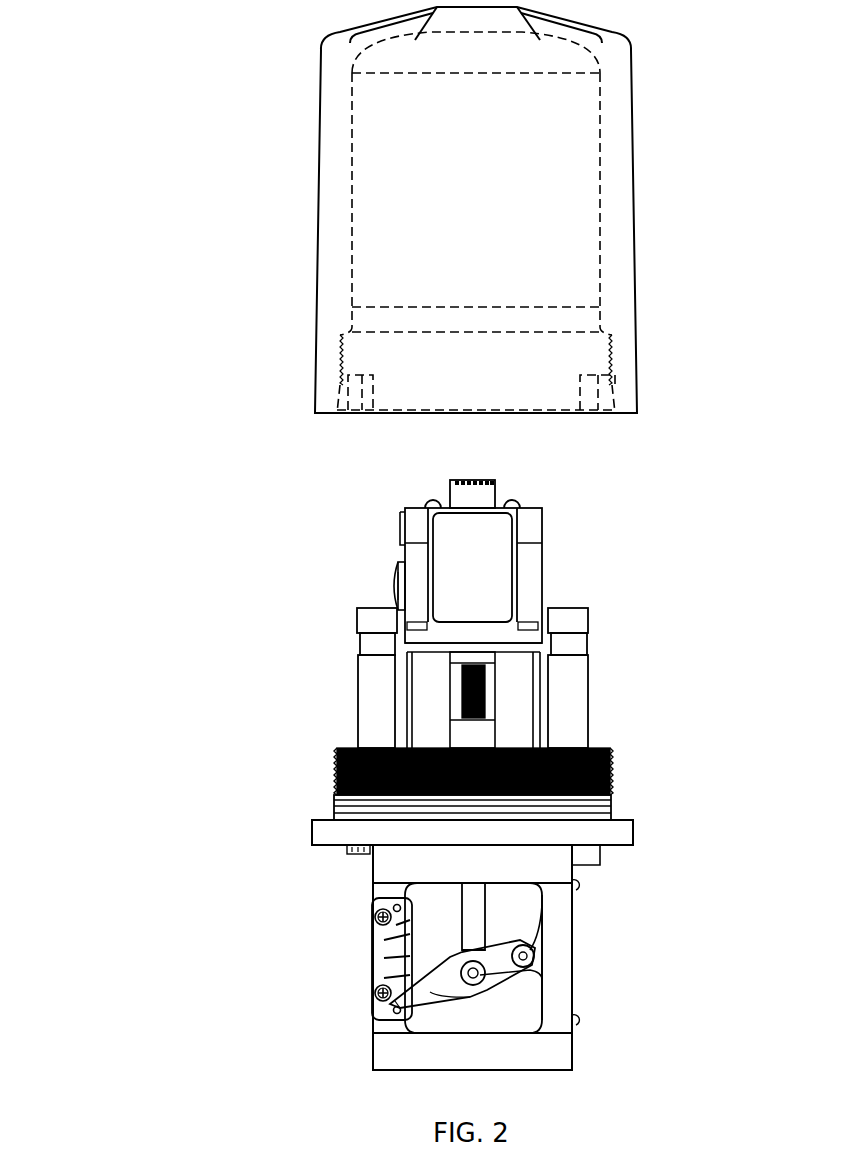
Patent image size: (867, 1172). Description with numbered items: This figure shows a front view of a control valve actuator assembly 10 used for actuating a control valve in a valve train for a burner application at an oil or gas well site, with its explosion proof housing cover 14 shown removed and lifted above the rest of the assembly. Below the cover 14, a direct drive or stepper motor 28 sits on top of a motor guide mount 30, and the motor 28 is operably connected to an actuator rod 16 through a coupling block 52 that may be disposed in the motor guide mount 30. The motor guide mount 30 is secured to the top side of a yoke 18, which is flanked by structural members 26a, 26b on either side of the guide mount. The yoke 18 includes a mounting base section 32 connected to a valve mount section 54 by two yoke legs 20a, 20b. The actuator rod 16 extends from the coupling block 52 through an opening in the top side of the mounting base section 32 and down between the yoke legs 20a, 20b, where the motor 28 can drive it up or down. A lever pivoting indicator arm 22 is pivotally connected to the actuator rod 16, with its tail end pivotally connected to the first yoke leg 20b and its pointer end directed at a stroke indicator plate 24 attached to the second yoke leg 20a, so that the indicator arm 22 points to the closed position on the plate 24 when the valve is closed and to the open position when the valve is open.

The control valve actuator assembly 10 is at (158, 391).
The explosion proof housing cover 14 is at (625, 166).
The actuator rod 16 is at (473, 918).
The yoke 18 is at (382, 872).
The second yoke leg 20a is at (383, 965).
The first yoke leg 20b is at (557, 950).
The lever pivoting indicator arm 22 is at (432, 992).
The stroke indicator plate 24 is at (382, 975).
The first support pillar 26a is at (375, 700).
The second support pillar 26b is at (577, 708).
The stepper motor 28 is at (415, 587).
The motor guide mount 30 is at (420, 670).
The mounting base section 32 is at (667, 828).
The coupling block 52 is at (473, 730).
The valve mount section 54 is at (555, 1052).